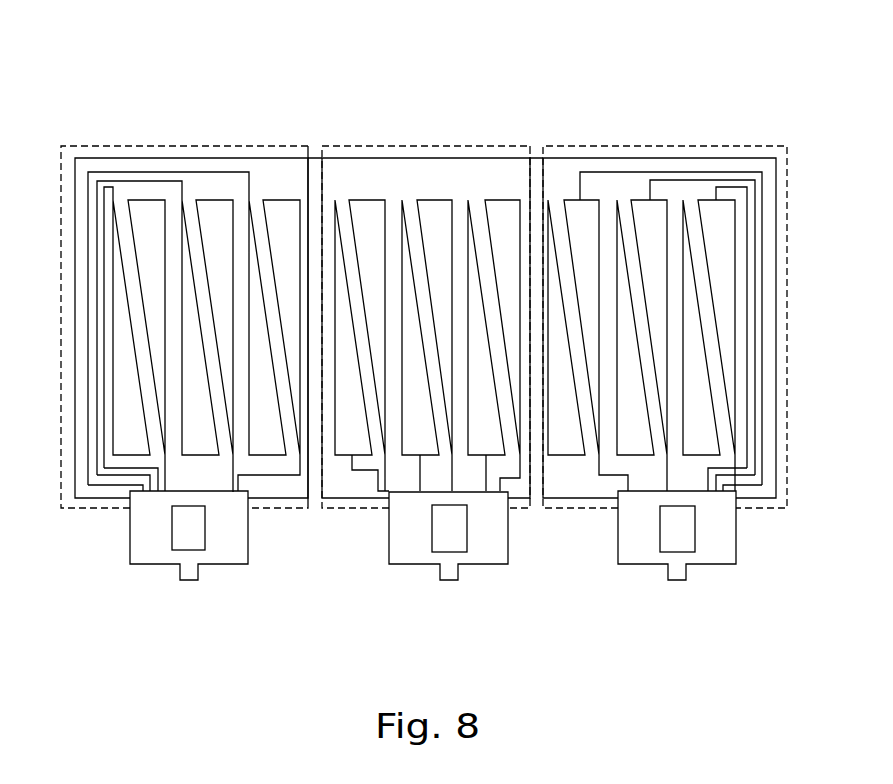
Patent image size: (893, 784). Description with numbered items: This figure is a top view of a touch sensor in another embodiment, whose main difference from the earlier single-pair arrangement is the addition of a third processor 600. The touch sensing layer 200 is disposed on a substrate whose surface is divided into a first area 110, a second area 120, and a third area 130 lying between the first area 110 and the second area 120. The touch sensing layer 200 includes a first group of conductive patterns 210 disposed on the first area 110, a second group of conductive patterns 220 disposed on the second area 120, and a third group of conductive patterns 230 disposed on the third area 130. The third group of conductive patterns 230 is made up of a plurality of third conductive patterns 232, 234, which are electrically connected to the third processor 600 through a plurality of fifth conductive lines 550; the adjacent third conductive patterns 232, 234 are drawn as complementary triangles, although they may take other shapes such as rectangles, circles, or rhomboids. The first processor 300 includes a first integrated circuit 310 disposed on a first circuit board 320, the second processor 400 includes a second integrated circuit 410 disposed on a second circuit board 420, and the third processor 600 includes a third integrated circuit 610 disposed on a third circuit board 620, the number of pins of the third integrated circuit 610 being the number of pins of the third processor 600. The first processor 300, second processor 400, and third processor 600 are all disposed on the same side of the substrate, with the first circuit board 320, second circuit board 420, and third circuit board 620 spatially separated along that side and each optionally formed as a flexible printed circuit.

The touch sensing layer 200 is at (650, 50).
The first group of conductive patterns 210 is at (271, 146).
The second group of conductive patterns 220 is at (597, 146).
The third group of conductive patterns 230 is at (432, 146).
The third conductive pattern 232 is at (468, 200).
The third conductive pattern 234 is at (500, 200).
The first area 110 is at (96, 508).
The second area 120 is at (593, 508).
The third area 130 is at (333, 505).
The fifth conductive lines 550 is at (373, 491).
The first processor 300 is at (268, 627).
The first integrated circuit 310 is at (173, 530).
The first circuit board 320 is at (230, 565).
The third processor 600 is at (517, 627).
The third integrated circuit 610 is at (467, 527).
The third circuit board 620 is at (412, 567).
The second processor 400 is at (740, 627).
The second integrated circuit 410 is at (695, 527).
The second circuit board 420 is at (637, 565).